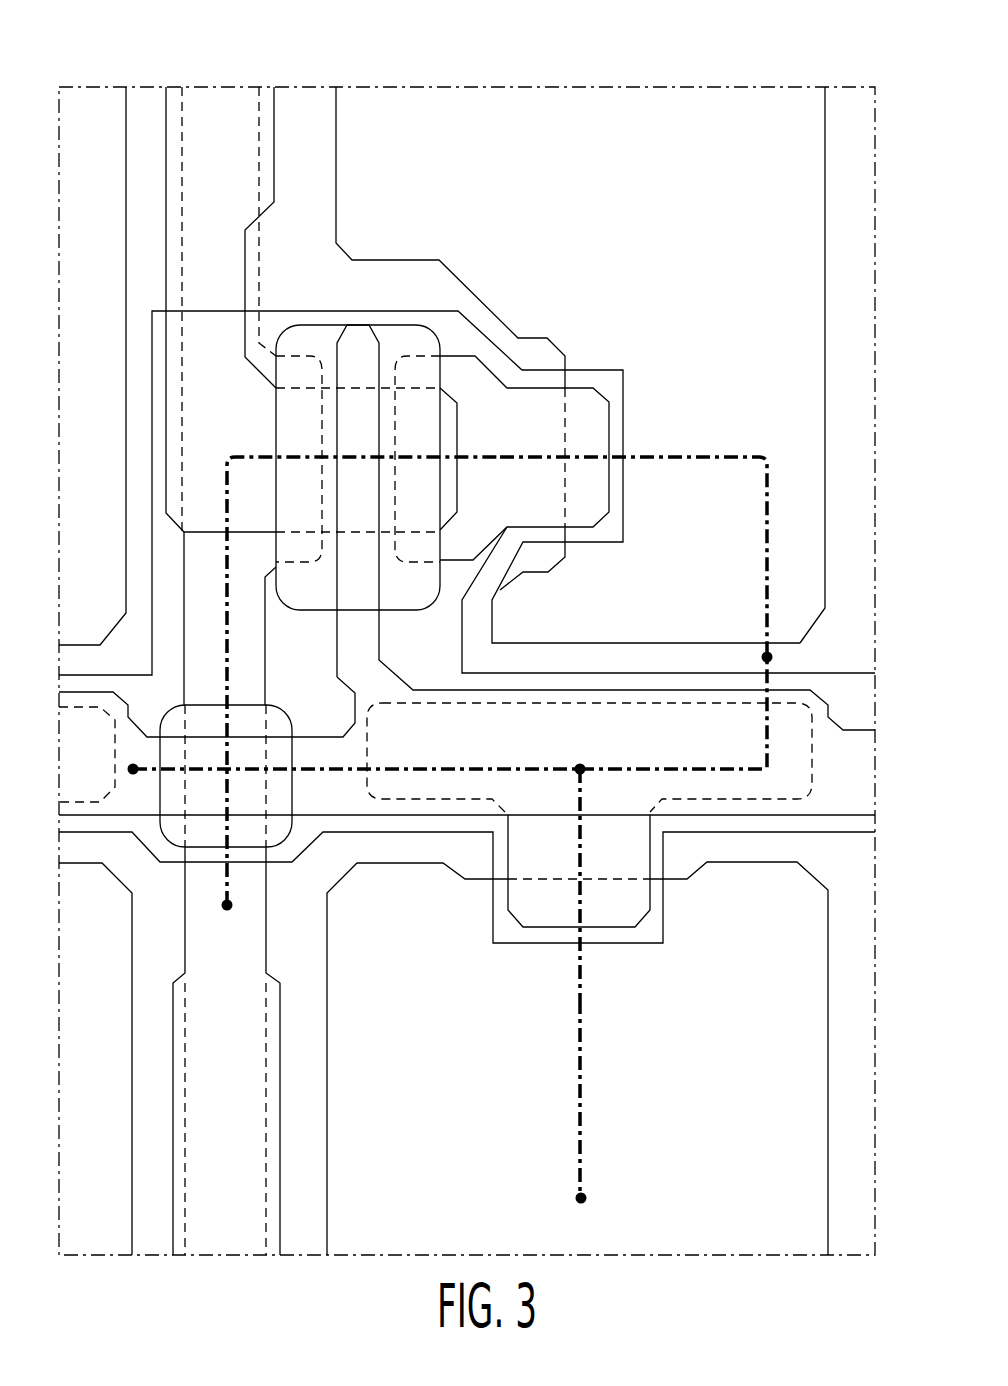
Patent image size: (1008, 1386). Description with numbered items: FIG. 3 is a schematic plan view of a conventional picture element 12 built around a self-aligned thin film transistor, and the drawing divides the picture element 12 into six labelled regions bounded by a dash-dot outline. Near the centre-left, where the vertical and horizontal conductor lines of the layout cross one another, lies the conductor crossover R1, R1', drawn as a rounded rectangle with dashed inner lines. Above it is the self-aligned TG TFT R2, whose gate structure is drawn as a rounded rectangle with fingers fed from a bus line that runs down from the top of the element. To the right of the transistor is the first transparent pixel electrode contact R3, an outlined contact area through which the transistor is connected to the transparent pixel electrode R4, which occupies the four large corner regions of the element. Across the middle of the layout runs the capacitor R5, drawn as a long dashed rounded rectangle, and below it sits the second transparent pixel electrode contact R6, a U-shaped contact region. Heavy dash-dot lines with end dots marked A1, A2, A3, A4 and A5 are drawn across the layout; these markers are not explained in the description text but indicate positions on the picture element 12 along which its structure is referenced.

The picture element 12 is at (843, 77).
The conductor crossover R1 is at (467, 980).
The conductor crossover R1' is at (268, 980).
The self-aligned TG TFT R2 is at (360, 305).
The first transparent pixel electrode contact R3 is at (600, 435).
The transparent pixel electrode R4 is at (103, 172).
The capacitor R5 is at (469, 750).
The second transparent pixel electrode contact R6 is at (571, 1013).
The section line point A1 is at (358, 701).
The section line point A2 is at (653, 613).
The section line point A3 is at (655, 882).
The section line point A4 is at (350, 787).
The section line point A5 is at (598, 1107).